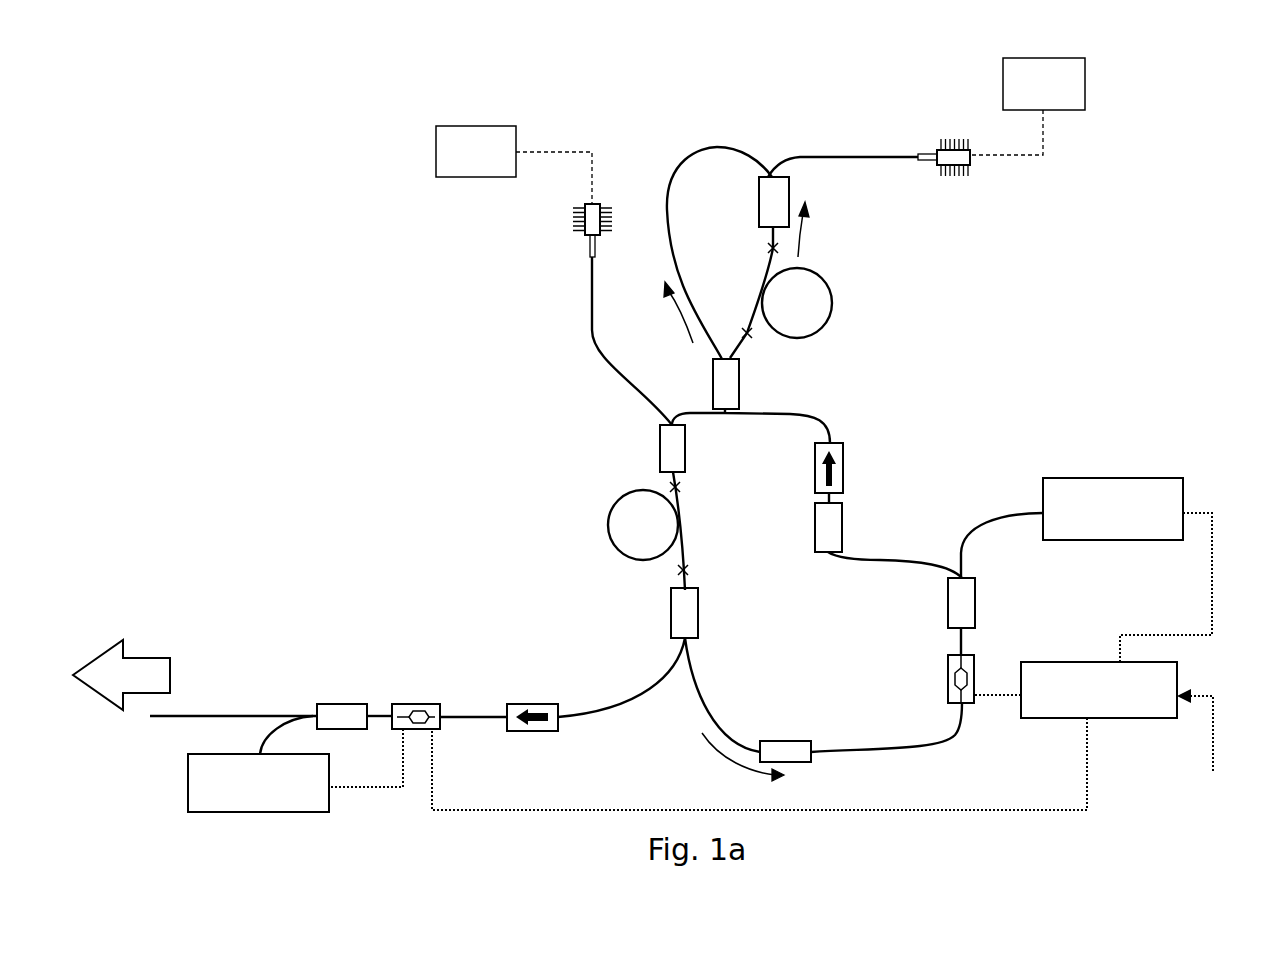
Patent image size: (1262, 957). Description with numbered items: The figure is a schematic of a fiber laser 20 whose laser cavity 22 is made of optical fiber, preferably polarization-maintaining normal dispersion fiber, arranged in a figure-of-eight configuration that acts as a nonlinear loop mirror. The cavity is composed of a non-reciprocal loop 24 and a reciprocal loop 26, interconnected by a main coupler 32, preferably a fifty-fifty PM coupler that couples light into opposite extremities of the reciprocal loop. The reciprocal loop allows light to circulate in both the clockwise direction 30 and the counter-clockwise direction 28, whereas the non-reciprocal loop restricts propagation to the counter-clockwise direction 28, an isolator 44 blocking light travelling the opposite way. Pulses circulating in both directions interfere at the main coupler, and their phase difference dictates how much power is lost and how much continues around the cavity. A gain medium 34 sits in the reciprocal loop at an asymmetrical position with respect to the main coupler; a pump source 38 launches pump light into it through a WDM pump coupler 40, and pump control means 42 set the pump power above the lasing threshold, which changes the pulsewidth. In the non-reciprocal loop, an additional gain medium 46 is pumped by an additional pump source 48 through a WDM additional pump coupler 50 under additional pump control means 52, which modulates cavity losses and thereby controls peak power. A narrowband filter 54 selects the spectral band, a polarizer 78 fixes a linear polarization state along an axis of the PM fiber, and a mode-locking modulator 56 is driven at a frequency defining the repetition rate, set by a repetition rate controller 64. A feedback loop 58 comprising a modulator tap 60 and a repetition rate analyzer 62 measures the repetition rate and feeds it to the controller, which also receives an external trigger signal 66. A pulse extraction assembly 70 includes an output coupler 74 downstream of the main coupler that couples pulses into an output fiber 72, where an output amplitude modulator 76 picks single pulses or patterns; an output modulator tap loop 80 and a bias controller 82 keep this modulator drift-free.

The fiber laser 20 is at (1049, 302).
The laser cavity 22 is at (783, 398).
The non-reciprocal loop 24 is at (900, 560).
The reciprocal loop 26 is at (690, 150).
The counter-clockwise direction 28 is at (787, 237).
The clockwise direction 30 is at (680, 316).
The main coupler 32 is at (712, 395).
The gain medium 34 is at (832, 305).
The pump source 38 is at (937, 150).
The WDM pump coupler 40 is at (770, 178).
The pump control means 42 is at (1085, 83).
The isolator 44 is at (843, 463).
The additional gain medium 46 is at (612, 520).
The additional pump source 48 is at (587, 233).
The WDM additional pump coupler 50 is at (660, 437).
The additional pump control means 52 is at (436, 152).
The narrowband filter 54 is at (783, 740).
The mode-locking modulator 56 is at (947, 683).
The feedback loop 58 is at (1216, 480).
The modulator tap 60 is at (975, 600).
The repetition rate analyzer 62 is at (1068, 478).
The repetition rate controller 64 is at (1110, 720).
The external trigger signal 66 is at (1212, 755).
The pulse extraction assembly 70 is at (358, 593).
The output fiber 72 is at (603, 710).
The output coupler 74 is at (698, 612).
The output amplitude modulator 76 is at (340, 703).
The polarizer 78 is at (815, 522).
The output modulator tap loop 80 is at (373, 818).
The bias controller 82 is at (295, 797).